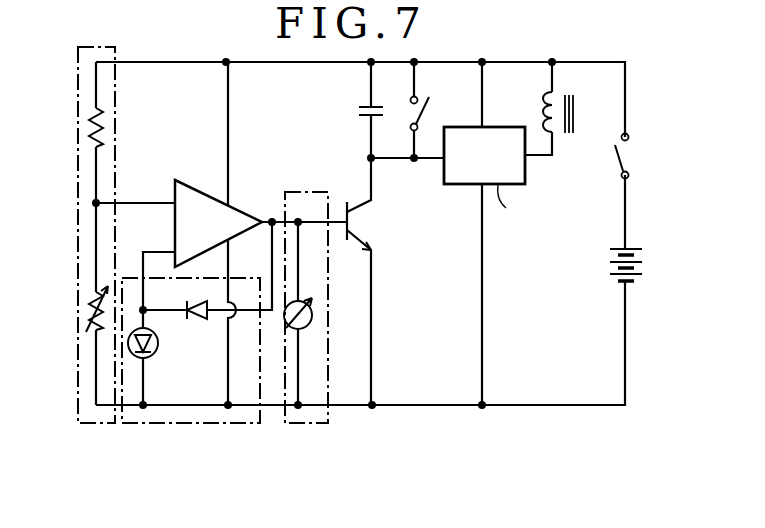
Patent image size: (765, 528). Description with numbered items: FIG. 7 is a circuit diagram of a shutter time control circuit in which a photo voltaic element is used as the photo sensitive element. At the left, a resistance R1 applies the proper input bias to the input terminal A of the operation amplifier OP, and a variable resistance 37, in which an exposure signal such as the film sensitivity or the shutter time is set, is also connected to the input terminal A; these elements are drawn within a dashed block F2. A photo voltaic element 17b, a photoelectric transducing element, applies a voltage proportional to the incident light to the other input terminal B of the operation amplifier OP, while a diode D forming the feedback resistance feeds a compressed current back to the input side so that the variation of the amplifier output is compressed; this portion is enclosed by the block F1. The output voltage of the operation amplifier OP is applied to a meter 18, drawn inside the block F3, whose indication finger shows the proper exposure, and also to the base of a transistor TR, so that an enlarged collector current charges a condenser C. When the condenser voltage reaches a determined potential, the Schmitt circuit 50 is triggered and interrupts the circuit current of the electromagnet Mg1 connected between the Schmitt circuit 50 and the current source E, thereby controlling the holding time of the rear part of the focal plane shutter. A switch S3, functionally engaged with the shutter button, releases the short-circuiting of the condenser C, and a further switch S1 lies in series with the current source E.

The variable resistance 37 is at (88, 310).
The photo voltaic element 17b is at (155, 354).
The meter 18 is at (312, 321).
The Schmitt circuit 50 is at (466, 157).
The resistance R1 is at (105, 124).
The operation amplifier OP is at (218, 223).
The input terminal A is at (160, 192).
The input terminal B is at (160, 267).
The diode D is at (197, 322).
The transistor TR is at (346, 206).
The condenser C is at (359, 109).
The switch S3 is at (424, 110).
The electromagnet Mg1 is at (575, 111).
The power switch S1 is at (630, 155).
The current source E is at (612, 263).
The light measuring circuit block F1 is at (190, 423).
The resistor circuit block F2 is at (95, 423).
The rheostat circuit block F3 is at (312, 423).